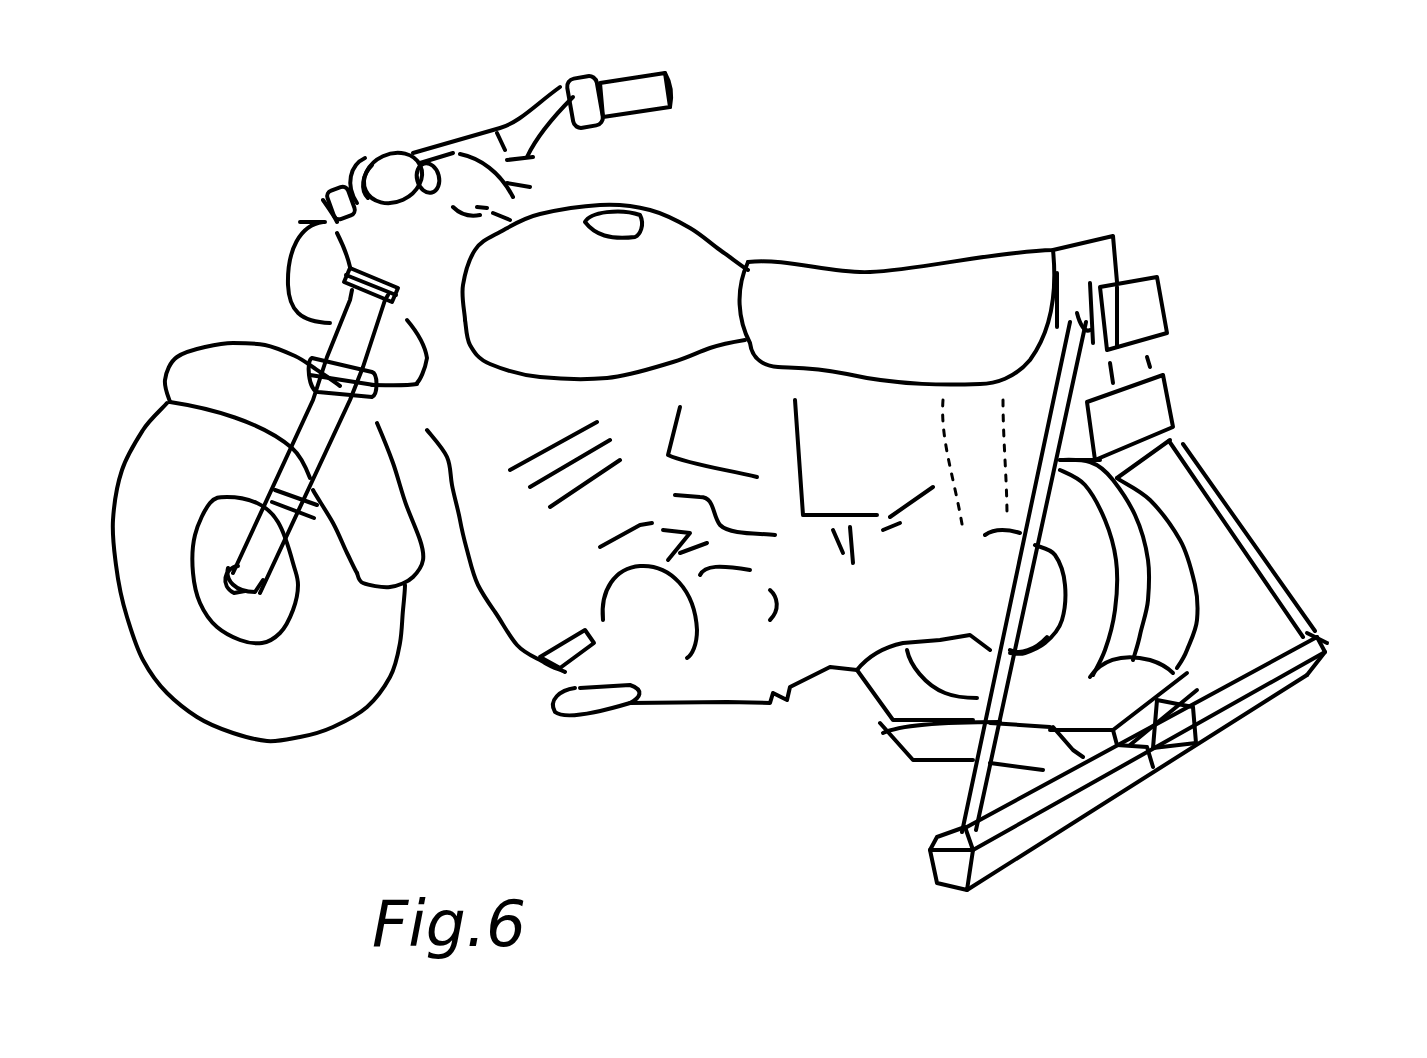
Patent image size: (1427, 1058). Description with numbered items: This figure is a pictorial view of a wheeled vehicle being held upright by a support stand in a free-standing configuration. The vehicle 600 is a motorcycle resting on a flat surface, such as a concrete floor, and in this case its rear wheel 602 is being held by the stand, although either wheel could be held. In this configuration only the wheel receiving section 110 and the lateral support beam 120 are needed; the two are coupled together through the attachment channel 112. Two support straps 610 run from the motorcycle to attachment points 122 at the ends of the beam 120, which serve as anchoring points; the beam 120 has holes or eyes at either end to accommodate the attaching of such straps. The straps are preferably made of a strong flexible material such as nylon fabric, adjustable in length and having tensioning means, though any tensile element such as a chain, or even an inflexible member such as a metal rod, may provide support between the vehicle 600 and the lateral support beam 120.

The vehicle 600 is at (940, 288).
The rear wheel 602 is at (1160, 500).
The support straps 610 is at (1233, 525).
The wheel receiving section 110 is at (883, 733).
The attachment channel 112 is at (1183, 747).
The lateral support beam 120 is at (1260, 697).
The attachment points 122 is at (1313, 633).